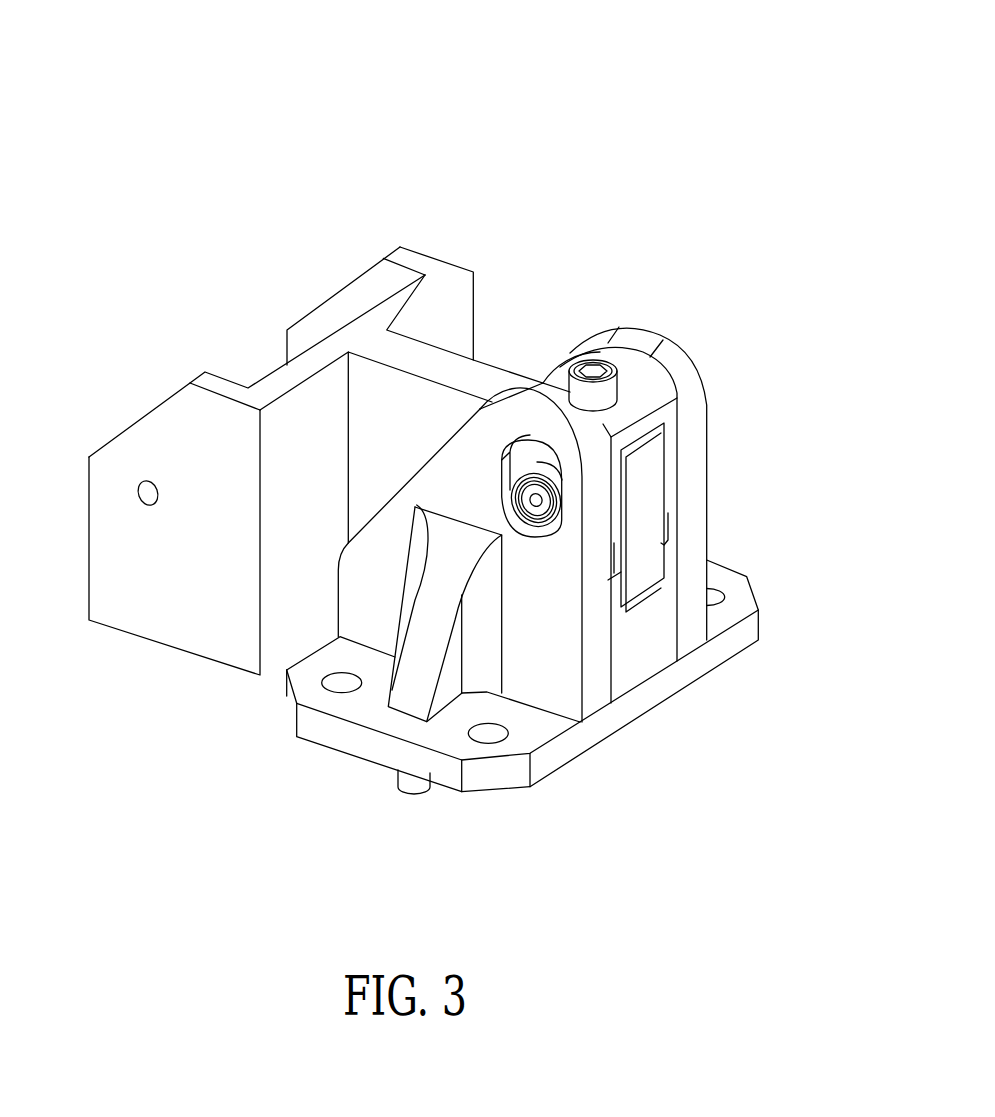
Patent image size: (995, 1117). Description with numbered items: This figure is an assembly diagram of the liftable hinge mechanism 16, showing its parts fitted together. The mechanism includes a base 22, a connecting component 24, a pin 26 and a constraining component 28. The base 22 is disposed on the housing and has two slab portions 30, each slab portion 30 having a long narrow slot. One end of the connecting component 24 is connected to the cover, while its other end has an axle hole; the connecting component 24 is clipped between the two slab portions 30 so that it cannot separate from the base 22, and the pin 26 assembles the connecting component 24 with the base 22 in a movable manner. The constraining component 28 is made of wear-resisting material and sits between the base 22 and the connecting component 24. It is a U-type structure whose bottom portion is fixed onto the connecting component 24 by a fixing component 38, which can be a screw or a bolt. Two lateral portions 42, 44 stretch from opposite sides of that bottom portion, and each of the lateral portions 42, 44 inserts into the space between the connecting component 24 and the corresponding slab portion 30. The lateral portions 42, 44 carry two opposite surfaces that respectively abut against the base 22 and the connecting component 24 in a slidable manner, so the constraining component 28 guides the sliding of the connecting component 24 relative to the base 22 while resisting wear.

The liftable hinge mechanism 16 is at (636, 82).
The base 22 is at (367, 713).
The connecting component 24 is at (170, 605).
The pin 26 is at (540, 513).
The constraining component 28 is at (640, 395).
The slab portions 30 is at (690, 630).
The fixing component 38 is at (580, 390).
The lateral portion 42 is at (612, 585).
The lateral portion 44 is at (674, 543).